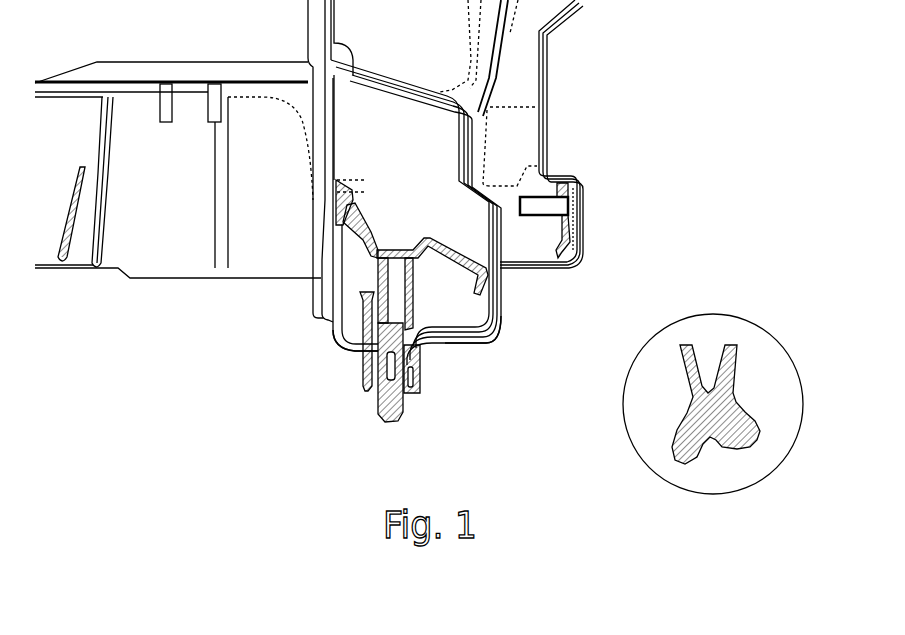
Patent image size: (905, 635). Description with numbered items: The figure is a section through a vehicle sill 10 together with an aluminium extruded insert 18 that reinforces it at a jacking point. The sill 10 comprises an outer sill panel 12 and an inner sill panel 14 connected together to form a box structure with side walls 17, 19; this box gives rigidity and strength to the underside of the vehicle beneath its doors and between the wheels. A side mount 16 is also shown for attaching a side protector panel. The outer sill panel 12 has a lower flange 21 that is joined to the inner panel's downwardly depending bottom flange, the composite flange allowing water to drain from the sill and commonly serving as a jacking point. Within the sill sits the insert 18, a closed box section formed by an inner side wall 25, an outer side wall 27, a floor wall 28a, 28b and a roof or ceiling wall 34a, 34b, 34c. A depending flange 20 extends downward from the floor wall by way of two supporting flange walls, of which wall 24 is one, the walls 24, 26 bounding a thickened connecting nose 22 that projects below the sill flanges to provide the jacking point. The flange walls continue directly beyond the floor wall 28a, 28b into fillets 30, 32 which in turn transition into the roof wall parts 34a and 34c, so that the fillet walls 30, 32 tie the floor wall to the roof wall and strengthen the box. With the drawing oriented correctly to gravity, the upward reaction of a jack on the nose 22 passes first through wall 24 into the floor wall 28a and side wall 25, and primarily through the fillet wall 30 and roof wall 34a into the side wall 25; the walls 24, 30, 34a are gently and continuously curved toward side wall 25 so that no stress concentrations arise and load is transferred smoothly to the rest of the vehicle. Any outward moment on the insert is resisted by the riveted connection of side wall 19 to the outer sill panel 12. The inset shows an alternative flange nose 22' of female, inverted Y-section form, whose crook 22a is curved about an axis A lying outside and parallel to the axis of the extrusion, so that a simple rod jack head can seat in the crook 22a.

The sill 10 is at (520, 130).
The outer sill panel 12 is at (490, 202).
The inner sill panel 14 is at (335, 331).
The side mount 16 is at (540, 268).
The side wall 17 is at (345, 236).
The insert 18 is at (391, 212).
The side wall 19 is at (395, 308).
The depending flange 20 is at (414, 430).
The lower flange 21 is at (420, 390).
The nose 22 is at (355, 387).
The crook 22a is at (743, 397).
The flange nose 22' is at (796, 474).
The supporting flange wall 24 is at (363, 380).
The inner side wall 25 is at (370, 282).
The wall 26 is at (412, 365).
The outer side wall 27 is at (490, 253).
The floor wall 28a is at (337, 343).
The floor wall 28b is at (490, 328).
The fillet wall 30 is at (380, 299).
The fillet wall 32 is at (395, 291).
The roof wall 34a is at (356, 215).
The roof wall 34b is at (400, 252).
The roof wall 34c is at (500, 237).
The axis A is at (719, 458).